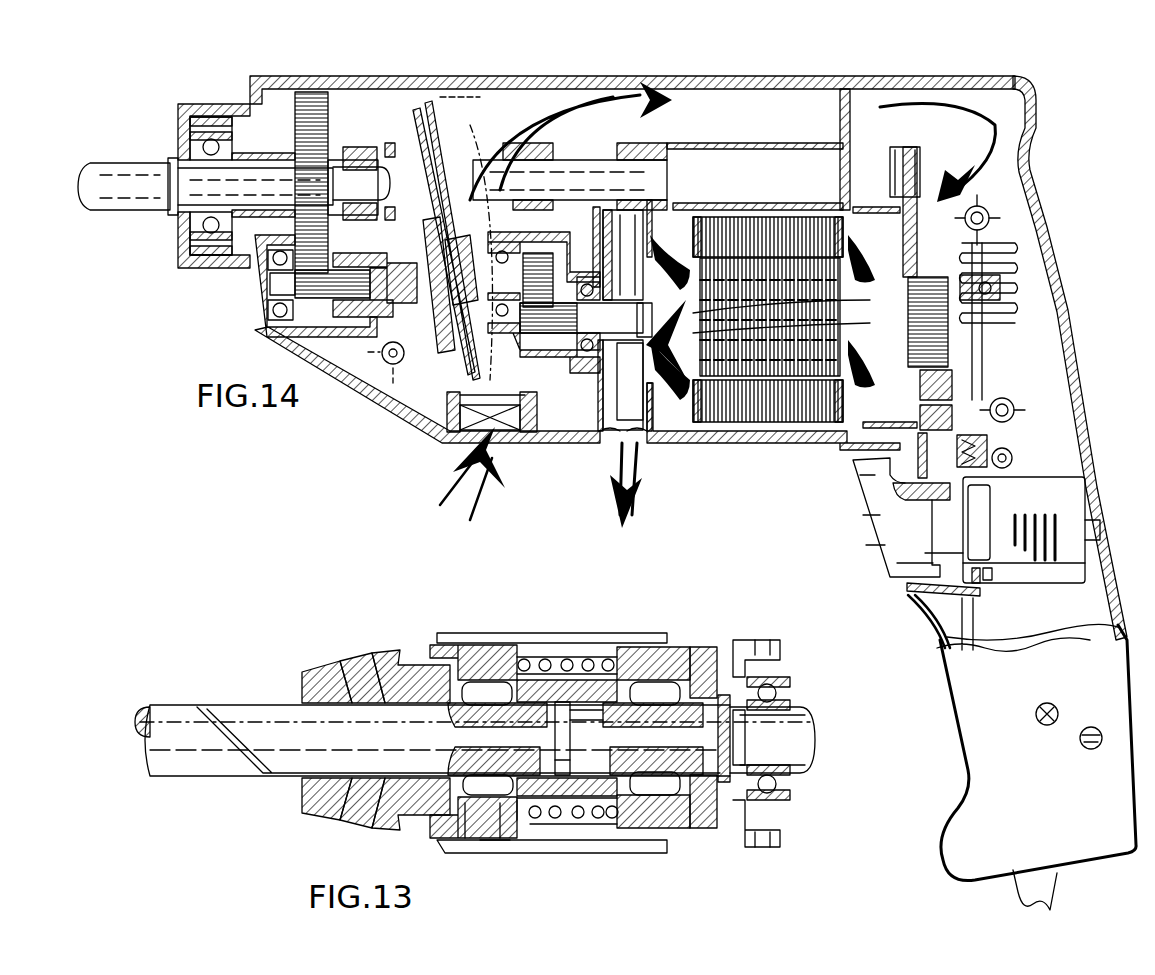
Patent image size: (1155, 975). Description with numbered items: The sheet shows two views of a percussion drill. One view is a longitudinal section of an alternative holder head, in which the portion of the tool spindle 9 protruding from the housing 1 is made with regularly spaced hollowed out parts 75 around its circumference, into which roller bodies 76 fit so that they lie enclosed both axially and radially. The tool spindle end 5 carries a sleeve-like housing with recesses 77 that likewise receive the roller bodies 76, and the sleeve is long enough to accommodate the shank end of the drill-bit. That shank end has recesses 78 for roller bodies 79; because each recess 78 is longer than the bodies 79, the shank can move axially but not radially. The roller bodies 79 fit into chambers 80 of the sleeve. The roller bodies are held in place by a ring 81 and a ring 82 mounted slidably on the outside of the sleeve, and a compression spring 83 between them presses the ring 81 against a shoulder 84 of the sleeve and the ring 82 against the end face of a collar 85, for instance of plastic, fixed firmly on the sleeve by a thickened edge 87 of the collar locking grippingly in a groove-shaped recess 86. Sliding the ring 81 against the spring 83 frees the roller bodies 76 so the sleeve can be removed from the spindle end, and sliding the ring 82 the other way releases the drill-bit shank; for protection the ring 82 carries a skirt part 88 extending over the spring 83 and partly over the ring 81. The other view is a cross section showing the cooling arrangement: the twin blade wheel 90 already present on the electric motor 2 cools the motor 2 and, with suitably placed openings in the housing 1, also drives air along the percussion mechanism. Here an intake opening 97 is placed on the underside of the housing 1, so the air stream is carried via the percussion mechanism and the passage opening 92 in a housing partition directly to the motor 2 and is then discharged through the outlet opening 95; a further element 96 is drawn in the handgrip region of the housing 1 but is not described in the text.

In FIG. 14, the housing 1 is at (557, 447).
In FIG. 13, the housing 1 is at (758, 637).
In FIG. 14, the electric motor 2 is at (768, 443).
In FIG. 13, the tool spindle end 5 is at (800, 777).
In FIG. 14, the spindle 9 is at (234, 186).
In FIG. 13, the spindle 9 is at (287, 747).
In FIG. 13, the hollowed out parts 75 is at (647, 690).
In FIG. 13, the roller bodies 76 is at (578, 683).
In FIG. 13, the recesses 77 is at (668, 668).
In FIG. 13, the recesses 78 is at (472, 837).
In FIG. 13, the roller bodies 79 is at (508, 833).
In FIG. 13, the chambers 80 is at (528, 820).
In FIG. 13, the ring 81 is at (660, 822).
In FIG. 13, the ring 82 is at (493, 840).
In FIG. 13, the compression spring 83 is at (545, 660).
In FIG. 13, the shoulder 84 is at (700, 650).
In FIG. 13, the collar 85 is at (333, 667).
In FIG. 13, the groove-shaped recess 86 is at (357, 683).
In FIG. 13, the thickened edge 87 is at (385, 667).
In FIG. 13, the skirt part 88 is at (483, 633).
In FIG. 14, the twin blade wheel 90 is at (655, 418).
In FIG. 14, the passage opening 92 is at (847, 110).
In FIG. 14, the outlet opening 95 is at (610, 443).
In FIG. 14, the switch 96 is at (1040, 355).
In FIG. 14, the intake opening 97 is at (467, 455).